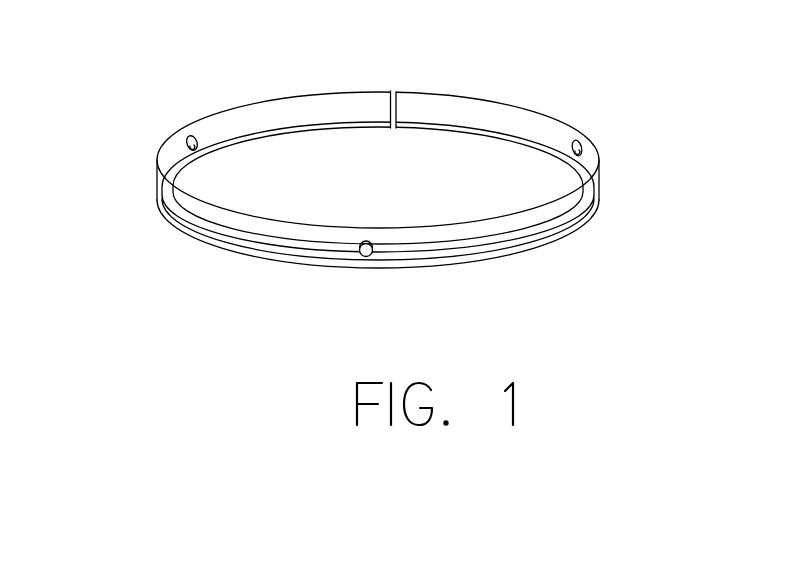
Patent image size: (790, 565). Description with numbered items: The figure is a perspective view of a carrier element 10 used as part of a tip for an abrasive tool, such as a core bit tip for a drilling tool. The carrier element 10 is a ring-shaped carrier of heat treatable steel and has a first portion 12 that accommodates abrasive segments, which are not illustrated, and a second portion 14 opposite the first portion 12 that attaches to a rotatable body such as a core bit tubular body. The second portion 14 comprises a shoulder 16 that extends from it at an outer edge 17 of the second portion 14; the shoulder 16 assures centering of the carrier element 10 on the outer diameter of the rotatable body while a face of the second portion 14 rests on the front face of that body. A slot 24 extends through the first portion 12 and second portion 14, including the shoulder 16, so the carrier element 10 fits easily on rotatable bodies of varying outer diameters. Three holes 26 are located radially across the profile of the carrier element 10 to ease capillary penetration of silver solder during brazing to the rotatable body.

The carrier element 10 is at (103, 34).
The first portion 12 is at (509, 105).
The second portion 14 is at (236, 231).
The shoulder 16 is at (167, 209).
The outer edge 17 is at (540, 237).
The slot 24 is at (391, 92).
The holes 26 is at (191, 136).